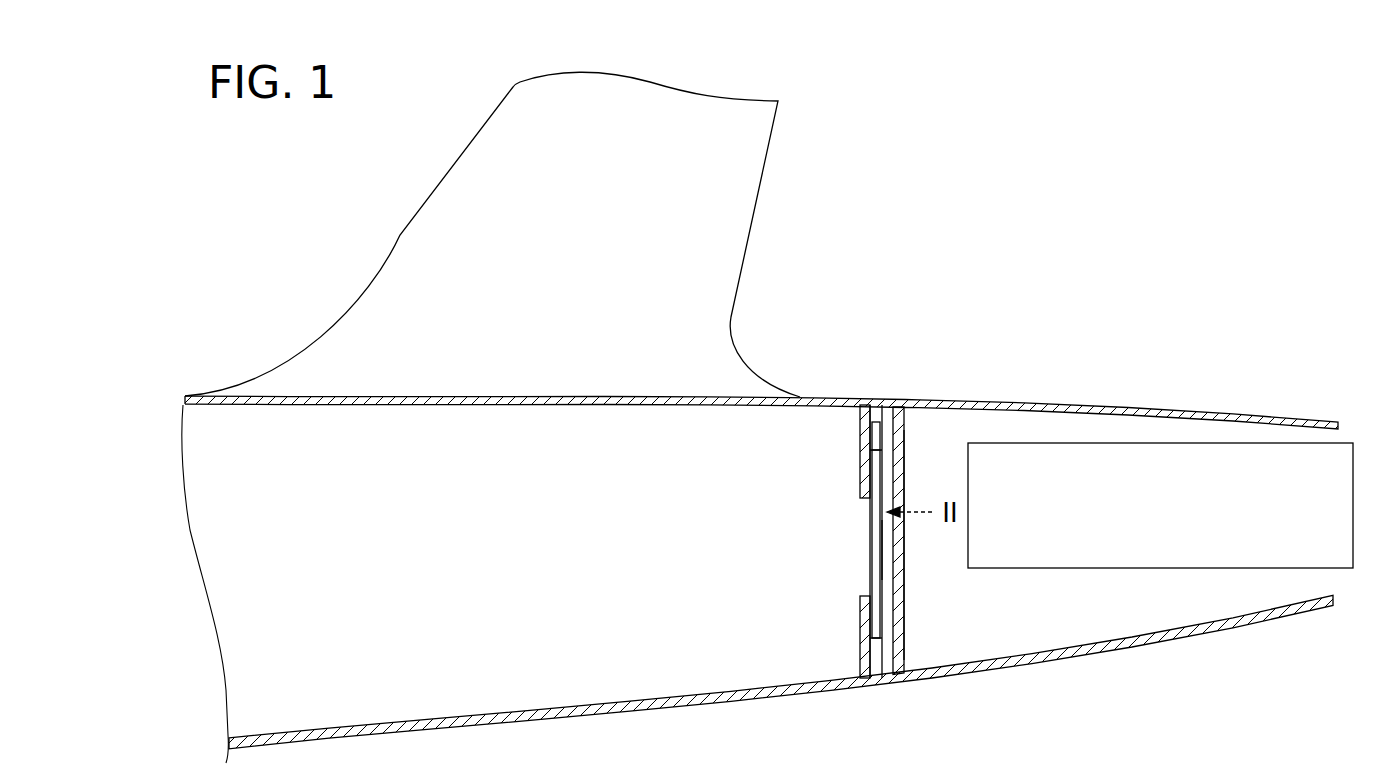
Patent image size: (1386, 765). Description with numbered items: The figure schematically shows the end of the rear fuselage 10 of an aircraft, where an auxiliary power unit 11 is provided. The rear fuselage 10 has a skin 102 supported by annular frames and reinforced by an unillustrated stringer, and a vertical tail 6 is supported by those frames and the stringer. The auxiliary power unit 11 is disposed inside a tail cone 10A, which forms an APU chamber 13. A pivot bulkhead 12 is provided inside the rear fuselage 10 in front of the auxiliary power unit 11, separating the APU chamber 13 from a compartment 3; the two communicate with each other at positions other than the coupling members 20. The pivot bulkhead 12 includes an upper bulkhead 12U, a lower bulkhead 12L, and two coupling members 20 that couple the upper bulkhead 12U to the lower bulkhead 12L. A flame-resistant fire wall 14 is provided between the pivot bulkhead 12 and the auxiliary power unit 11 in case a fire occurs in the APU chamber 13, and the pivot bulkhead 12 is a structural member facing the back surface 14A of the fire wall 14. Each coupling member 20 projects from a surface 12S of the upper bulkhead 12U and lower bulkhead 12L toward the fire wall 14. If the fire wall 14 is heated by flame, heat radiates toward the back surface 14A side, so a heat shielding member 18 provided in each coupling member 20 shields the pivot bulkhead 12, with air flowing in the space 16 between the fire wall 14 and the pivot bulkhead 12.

The compartment 3 is at (645, 571).
The vertical tail 6 is at (763, 175).
The rear fuselage 10 is at (761, 545).
The skin 102 is at (628, 397).
The tail cone 10A is at (1138, 407).
The auxiliary power unit 11 is at (1237, 443).
The pivot bulkhead 12 is at (872, 508).
The upper bulkhead 12U is at (858, 481).
The lower bulkhead 12L is at (860, 642).
The surface 12S is at (906, 643).
The APU chamber 13 is at (1135, 616).
The fire wall 14 is at (905, 578).
The back surface 14A is at (878, 600).
The space 16 is at (893, 425).
The heat shielding member 18 is at (883, 459).
The coupling member 20 is at (883, 551).